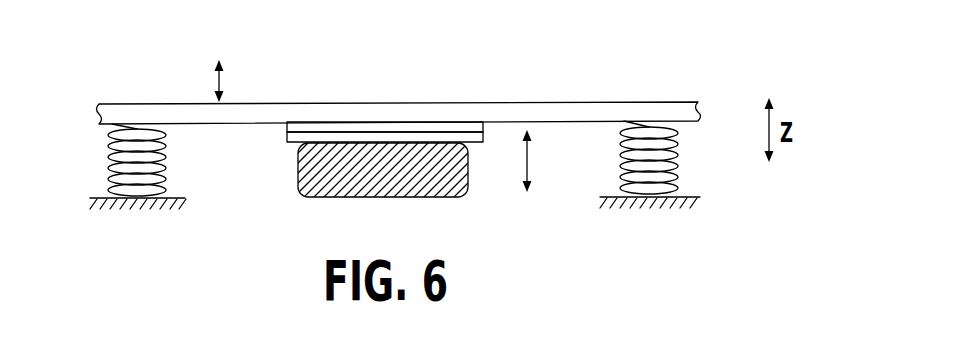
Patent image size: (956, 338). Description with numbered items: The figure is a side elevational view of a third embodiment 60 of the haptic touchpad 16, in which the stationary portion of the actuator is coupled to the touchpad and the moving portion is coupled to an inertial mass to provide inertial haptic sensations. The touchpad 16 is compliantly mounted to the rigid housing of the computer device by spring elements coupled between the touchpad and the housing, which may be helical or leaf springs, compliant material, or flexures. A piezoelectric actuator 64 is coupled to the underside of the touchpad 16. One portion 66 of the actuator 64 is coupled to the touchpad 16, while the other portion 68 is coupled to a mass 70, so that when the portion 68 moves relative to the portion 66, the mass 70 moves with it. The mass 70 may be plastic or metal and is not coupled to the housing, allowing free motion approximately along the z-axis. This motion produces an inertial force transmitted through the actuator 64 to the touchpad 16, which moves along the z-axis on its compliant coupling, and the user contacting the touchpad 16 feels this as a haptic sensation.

The haptic touchpad 16 is at (578, 100).
The third embodiment 60 is at (142, 53).
The actuator 64 is at (489, 134).
The portion of actuator coupled to touchpad 66 is at (287, 126).
The portion of actuator coupled to mass 68 is at (287, 137).
The mass 70 is at (397, 180).